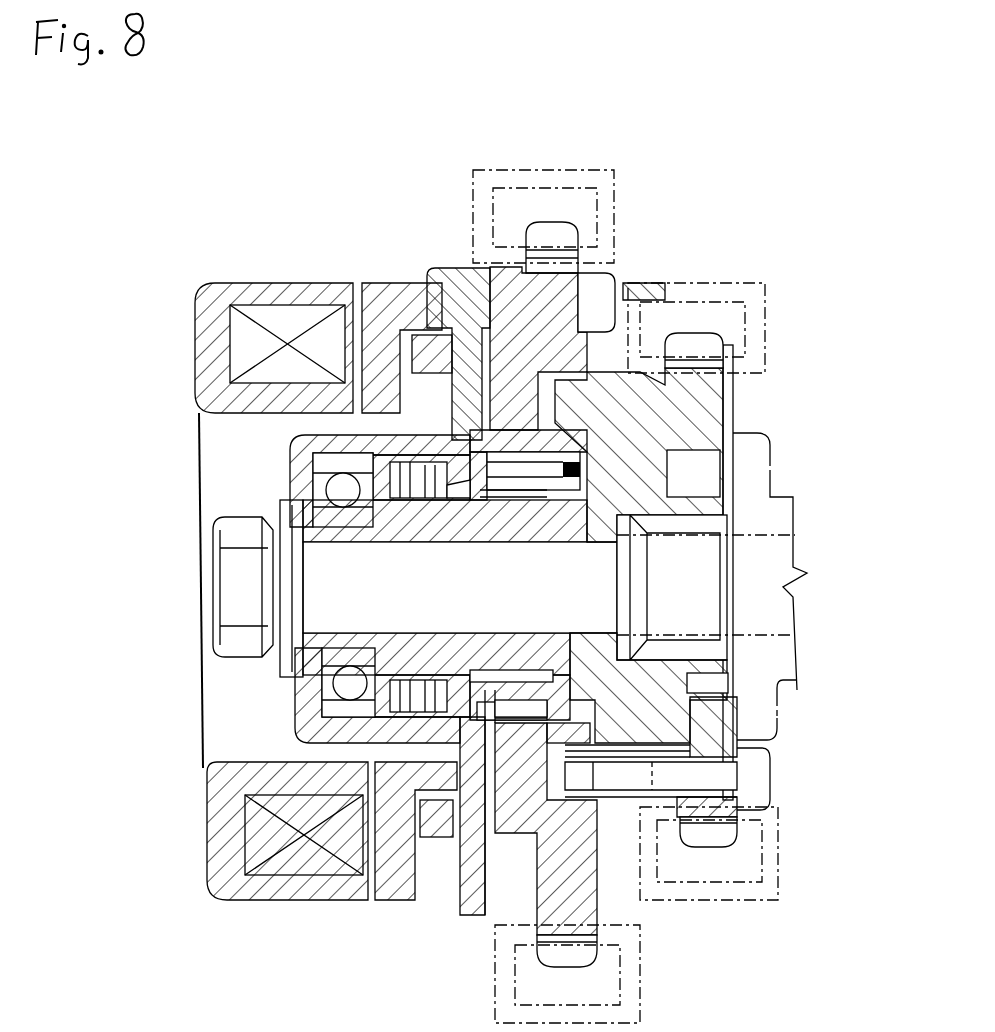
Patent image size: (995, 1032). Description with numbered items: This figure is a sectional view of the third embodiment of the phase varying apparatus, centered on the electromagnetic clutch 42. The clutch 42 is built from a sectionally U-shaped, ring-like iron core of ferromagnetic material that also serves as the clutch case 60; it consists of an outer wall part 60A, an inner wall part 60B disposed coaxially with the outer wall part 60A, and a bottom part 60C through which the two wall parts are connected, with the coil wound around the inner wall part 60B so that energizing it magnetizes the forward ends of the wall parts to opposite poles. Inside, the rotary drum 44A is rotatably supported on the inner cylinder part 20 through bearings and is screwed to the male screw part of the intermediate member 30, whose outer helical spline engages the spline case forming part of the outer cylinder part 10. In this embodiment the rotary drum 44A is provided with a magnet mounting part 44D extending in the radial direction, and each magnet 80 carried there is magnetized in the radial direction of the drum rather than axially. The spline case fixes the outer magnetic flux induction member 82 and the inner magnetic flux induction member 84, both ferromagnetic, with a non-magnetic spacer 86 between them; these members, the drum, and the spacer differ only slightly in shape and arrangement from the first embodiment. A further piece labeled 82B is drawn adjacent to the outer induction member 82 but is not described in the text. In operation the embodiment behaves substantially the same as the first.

The outer cylinder part 10 is at (548, 222).
The inner cylinder part 20 is at (440, 517).
The intermediate member 30 is at (483, 480).
The electromagnetic clutch 42 is at (302, 243).
The rotary drum 44A is at (390, 447).
The magnet mounting part 44D is at (487, 385).
The clutch case 60 is at (284, 218).
The outer wall part 60A is at (285, 283).
The inner wall part 60B is at (320, 413).
The bottom part 60C is at (192, 338).
The magnet 80 is at (437, 358).
The outer magnetic flux induction member 82 is at (385, 330).
The armature inner piece 82B is at (428, 335).
The inner magnetic flux induction member 84 is at (325, 420).
The spacer 86 is at (378, 318).